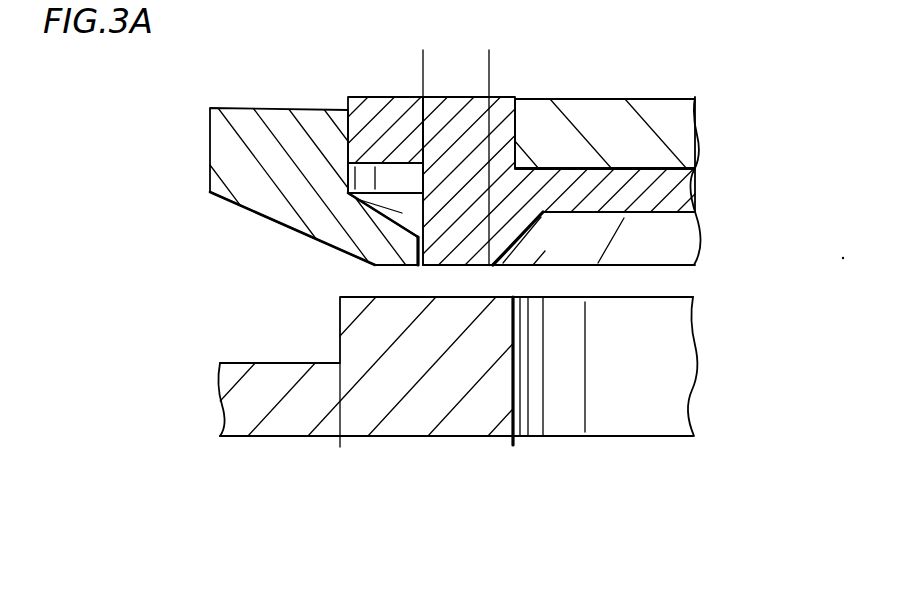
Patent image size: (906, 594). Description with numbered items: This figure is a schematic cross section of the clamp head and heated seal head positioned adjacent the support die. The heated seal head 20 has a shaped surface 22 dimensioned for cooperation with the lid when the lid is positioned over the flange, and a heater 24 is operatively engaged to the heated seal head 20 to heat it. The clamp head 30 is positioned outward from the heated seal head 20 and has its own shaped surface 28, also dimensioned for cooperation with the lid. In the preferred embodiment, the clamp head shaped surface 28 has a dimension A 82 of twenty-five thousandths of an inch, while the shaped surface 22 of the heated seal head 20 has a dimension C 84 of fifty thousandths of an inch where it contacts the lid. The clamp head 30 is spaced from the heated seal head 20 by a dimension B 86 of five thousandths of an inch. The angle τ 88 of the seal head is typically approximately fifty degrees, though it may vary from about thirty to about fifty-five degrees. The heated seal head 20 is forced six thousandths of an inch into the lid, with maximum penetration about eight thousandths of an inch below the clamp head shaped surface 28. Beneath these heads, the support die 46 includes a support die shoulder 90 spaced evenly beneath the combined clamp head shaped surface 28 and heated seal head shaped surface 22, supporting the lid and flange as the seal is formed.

The clamp head 30 is at (210, 132).
The heater 24 is at (695, 128).
The heated seal head 20 is at (695, 185).
The shaped surface 22 is at (478, 268).
The shaped surface 28 is at (375, 268).
The support die 46 is at (695, 348).
The dimension A 82 is at (422, 268).
The dimension C 84 is at (489, 50).
The dimension B 86 is at (422, 268).
The angle τ 88 is at (541, 216).
The support die shoulder 90 is at (515, 445).